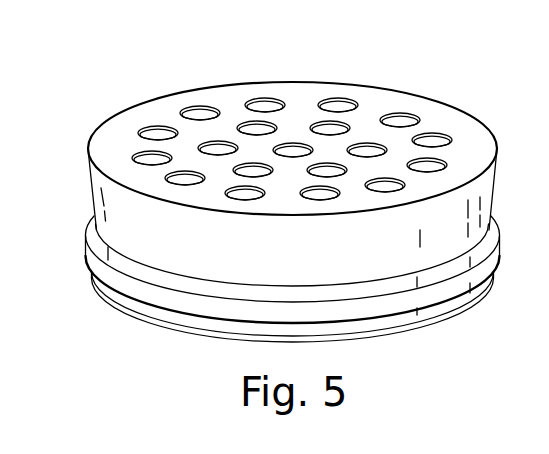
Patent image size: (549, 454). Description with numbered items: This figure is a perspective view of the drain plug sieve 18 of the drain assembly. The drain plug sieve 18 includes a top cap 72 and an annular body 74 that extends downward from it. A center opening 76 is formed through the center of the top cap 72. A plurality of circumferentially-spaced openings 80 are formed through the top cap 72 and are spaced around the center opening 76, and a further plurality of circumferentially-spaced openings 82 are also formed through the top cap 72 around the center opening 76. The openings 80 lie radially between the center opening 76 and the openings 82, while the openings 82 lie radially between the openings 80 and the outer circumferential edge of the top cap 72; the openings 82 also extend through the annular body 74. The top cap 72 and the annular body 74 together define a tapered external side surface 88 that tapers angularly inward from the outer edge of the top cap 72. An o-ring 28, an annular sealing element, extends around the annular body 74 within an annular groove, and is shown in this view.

The drain plug sieve 18 is at (262, 198).
The top cap 72 is at (292, 149).
The center opening 76 is at (293, 145).
The openings 80 is at (331, 135).
The openings 82 is at (199, 120).
The tapered external side surface 88 is at (93, 197).
The o-ring 28 is at (88, 246).
The annular body 74 is at (150, 324).